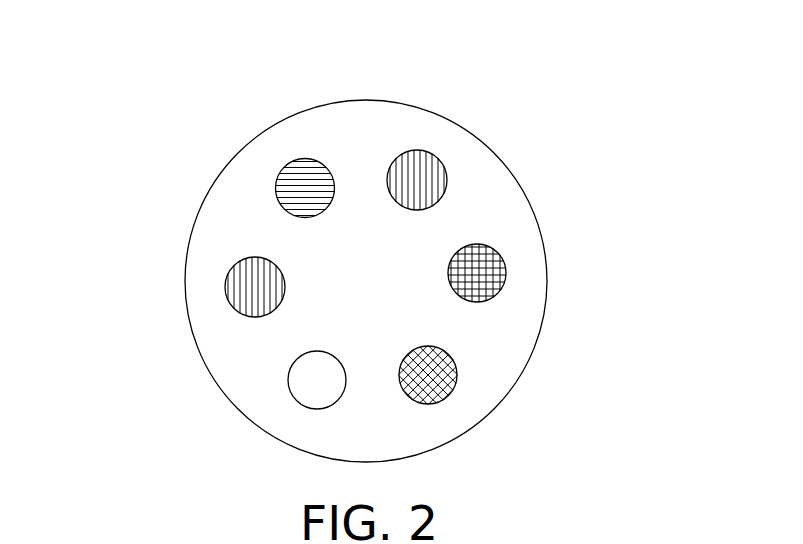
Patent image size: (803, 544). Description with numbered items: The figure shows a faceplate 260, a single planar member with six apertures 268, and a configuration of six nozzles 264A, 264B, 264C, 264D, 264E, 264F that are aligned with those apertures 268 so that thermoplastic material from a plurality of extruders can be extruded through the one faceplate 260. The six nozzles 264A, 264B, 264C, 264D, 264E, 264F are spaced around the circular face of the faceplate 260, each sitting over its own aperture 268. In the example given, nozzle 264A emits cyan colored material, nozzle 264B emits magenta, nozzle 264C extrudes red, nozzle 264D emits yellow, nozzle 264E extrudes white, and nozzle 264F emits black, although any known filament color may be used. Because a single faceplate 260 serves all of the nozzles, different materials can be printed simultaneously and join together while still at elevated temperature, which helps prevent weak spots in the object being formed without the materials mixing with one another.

The faceplate 260 is at (383, 293).
The nozzle 264A is at (305, 190).
The nozzle 264B is at (418, 175).
The nozzle 264C is at (478, 246).
The nozzle 264D is at (255, 287).
The nozzle 264E is at (317, 380).
The nozzle 264F is at (449, 394).
The apertures 268 is at (386, 184).